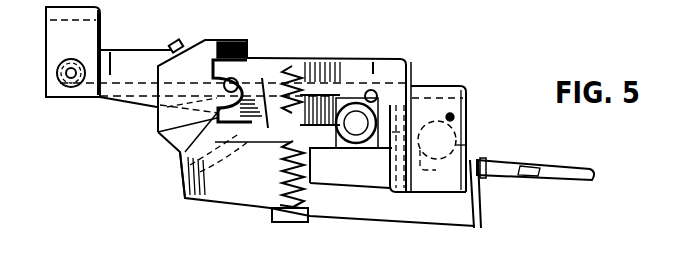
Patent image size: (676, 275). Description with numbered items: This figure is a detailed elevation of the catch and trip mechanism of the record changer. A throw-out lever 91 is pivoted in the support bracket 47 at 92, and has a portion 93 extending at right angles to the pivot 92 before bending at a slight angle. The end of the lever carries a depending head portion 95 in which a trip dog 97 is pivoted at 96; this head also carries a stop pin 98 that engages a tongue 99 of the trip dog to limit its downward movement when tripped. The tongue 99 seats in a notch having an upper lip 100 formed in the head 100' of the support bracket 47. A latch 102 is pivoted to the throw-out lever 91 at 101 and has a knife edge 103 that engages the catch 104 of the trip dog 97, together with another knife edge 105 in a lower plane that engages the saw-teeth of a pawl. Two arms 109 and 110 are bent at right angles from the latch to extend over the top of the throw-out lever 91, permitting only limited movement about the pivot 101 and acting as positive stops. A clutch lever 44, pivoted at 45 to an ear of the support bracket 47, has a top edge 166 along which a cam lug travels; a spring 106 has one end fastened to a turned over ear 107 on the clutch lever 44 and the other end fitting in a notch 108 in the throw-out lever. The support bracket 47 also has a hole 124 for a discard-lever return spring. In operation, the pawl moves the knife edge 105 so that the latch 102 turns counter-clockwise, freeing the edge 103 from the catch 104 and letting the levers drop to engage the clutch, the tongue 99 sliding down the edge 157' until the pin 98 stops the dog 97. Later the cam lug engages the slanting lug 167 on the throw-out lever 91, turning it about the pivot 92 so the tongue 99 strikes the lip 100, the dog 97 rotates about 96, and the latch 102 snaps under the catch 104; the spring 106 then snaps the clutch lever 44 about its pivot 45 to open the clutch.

The pivot 92 is at (66, 74).
The portion of throw-out lever 93 is at (115, 57).
The arm of latch 109 is at (175, 40).
The arm of latch 110 is at (226, 40).
The pivot of latch 101 is at (243, 60).
The slanting lug 167 is at (267, 77).
The notch 108 is at (293, 67).
The pivot of trip dog 96 is at (347, 82).
The throw-out lever 91 is at (374, 54).
The stop pin 98 is at (375, 90).
The upper lip 100 is at (422, 116).
The tongue 99 is at (434, 88).
The support bracket 47 is at (466, 85).
The hole 124 is at (454, 115).
The pivot of clutch lever 45 is at (467, 131).
The head of support bracket 100' is at (493, 143).
The clutch lever 44 is at (481, 202).
The depending head portion 95 is at (355, 150).
The trip dog 97 is at (325, 150).
The edge 157' is at (376, 156).
The top edge of clutch lever head 166 is at (260, 132).
The spring 106 is at (274, 207).
The turned over ear 107 is at (278, 223).
The knife edge 103 is at (186, 177).
The knife edge 105 is at (184, 197).
The latch 102 is at (159, 122).
The catch 104 is at (162, 133).